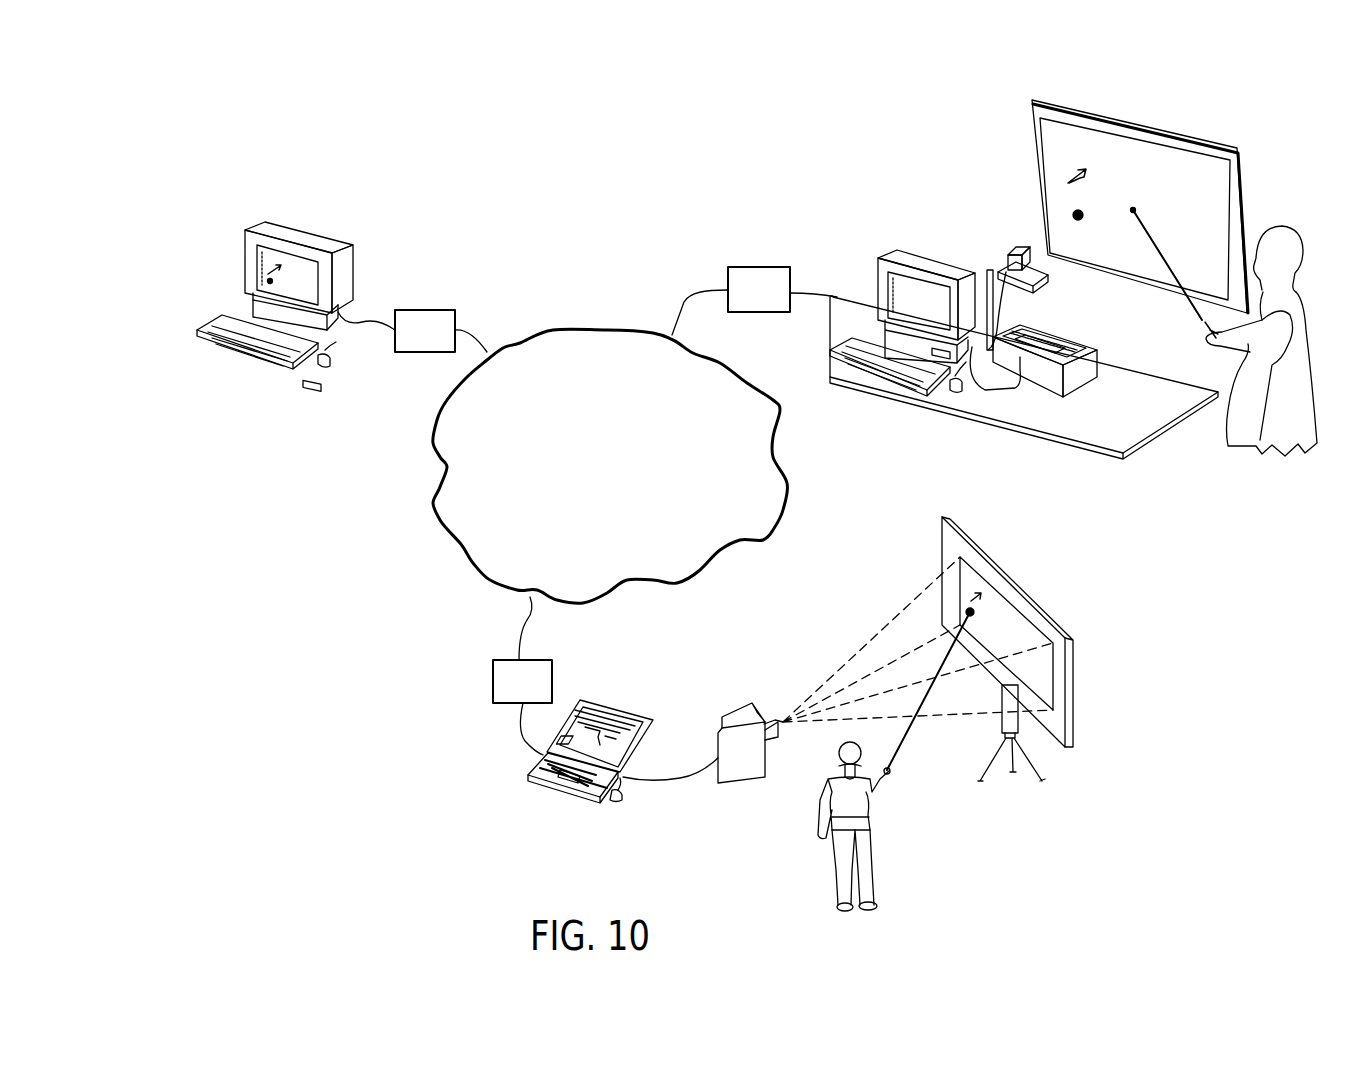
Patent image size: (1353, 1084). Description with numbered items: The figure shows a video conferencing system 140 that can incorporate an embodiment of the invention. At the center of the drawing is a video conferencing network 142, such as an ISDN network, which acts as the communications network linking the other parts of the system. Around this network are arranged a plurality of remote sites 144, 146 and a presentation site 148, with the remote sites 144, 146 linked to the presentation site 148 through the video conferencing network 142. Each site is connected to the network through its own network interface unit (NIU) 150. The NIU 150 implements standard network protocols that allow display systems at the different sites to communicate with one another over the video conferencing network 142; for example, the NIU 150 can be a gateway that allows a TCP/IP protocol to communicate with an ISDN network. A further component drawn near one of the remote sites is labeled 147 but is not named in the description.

The video conferencing system 140 is at (318, 504).
The video conferencing network 142 is at (787, 481).
The remote site 144 is at (313, 184).
The remote site 146 is at (1025, 546).
The laptop computer 147 is at (562, 792).
The presentation site 148 is at (888, 208).
The network interface unit (NIU) 150 is at (430, 310).